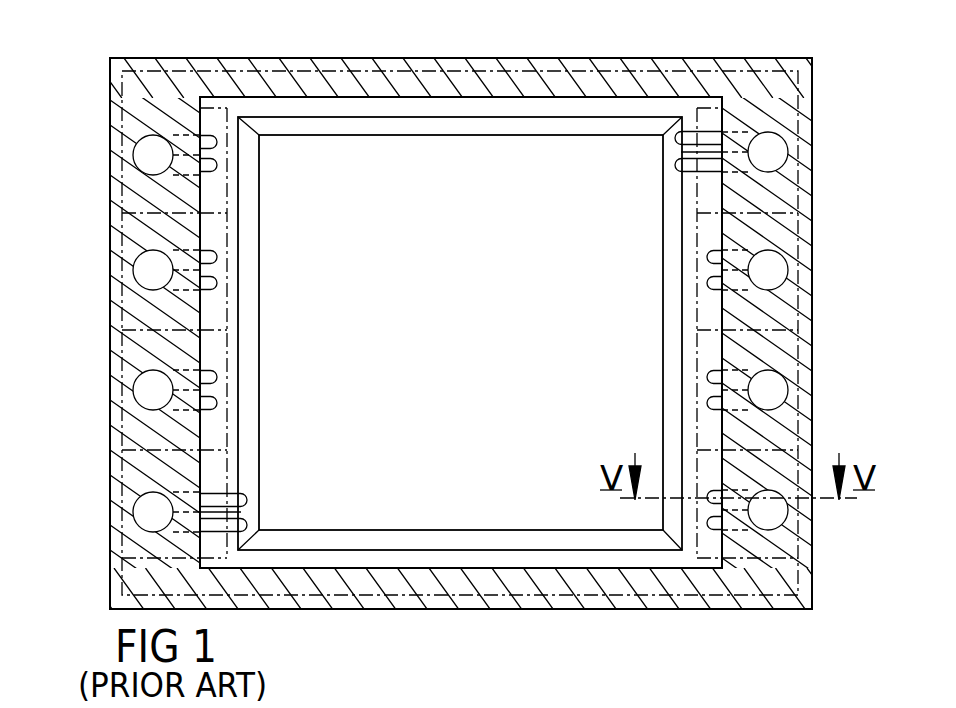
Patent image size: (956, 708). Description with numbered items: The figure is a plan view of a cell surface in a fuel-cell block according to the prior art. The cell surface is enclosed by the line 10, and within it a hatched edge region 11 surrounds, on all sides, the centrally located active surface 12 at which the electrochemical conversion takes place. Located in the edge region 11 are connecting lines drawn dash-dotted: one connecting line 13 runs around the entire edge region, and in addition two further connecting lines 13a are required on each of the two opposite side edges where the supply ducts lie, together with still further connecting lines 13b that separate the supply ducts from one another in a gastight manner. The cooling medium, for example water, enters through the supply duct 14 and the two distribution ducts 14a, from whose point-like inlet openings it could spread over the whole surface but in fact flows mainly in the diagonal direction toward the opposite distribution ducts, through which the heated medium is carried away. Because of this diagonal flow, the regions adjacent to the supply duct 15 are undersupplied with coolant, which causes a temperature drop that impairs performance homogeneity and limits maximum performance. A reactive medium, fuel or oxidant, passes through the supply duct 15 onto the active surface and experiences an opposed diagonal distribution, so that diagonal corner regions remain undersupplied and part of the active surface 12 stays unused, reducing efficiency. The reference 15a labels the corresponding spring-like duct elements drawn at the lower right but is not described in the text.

The line 10 is at (575, 57).
The edge region 11 is at (660, 85).
The active surface 12 is at (468, 320).
The connecting line 13 is at (817, 382).
The further connecting lines 13a is at (695, 312).
The still further connecting lines 13b is at (720, 306).
The supply duct 14 is at (772, 151).
The distribution ducts 14a is at (675, 143).
The supply duct 15 is at (793, 513).
The spring element 15a is at (707, 523).